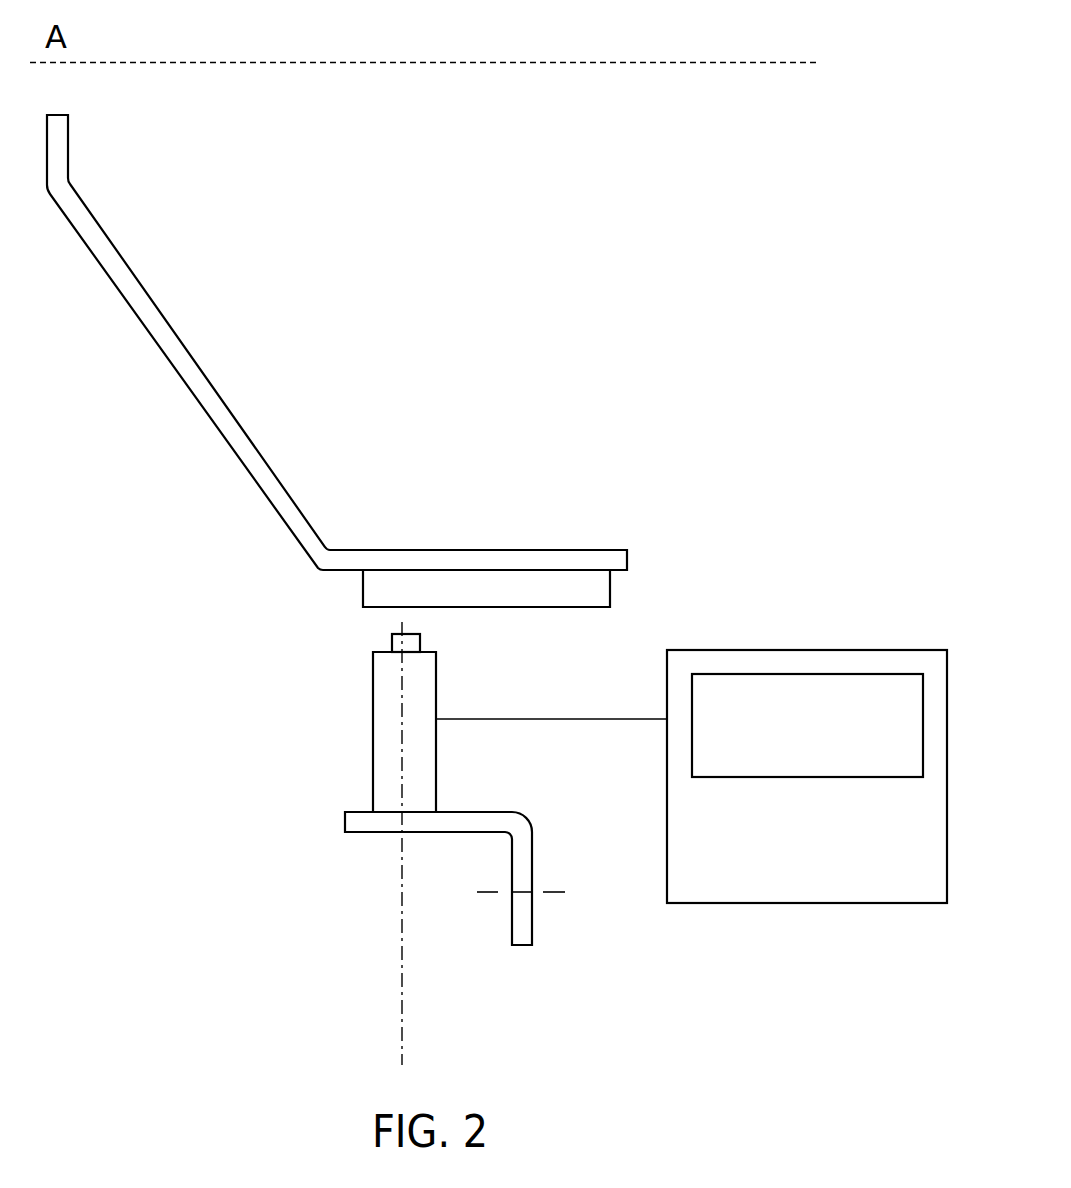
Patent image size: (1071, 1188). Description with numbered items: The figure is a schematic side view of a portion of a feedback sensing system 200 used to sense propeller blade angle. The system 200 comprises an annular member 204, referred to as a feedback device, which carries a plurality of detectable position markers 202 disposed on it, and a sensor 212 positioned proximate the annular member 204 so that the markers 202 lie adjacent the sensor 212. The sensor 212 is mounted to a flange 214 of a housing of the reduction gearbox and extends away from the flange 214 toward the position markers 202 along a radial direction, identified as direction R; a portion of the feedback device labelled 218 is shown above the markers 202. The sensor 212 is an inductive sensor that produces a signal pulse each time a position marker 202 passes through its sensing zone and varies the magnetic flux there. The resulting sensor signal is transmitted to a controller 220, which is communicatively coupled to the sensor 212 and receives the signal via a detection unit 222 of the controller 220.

The feedback sensing system 200 is at (742, 369).
The position markers 202 is at (467, 585).
The annular member 204 is at (147, 327).
The sensor 212 is at (374, 716).
The flange 214 is at (345, 822).
The support plate 218 is at (587, 548).
The controller 220 is at (833, 890).
The detection unit 222 is at (833, 758).